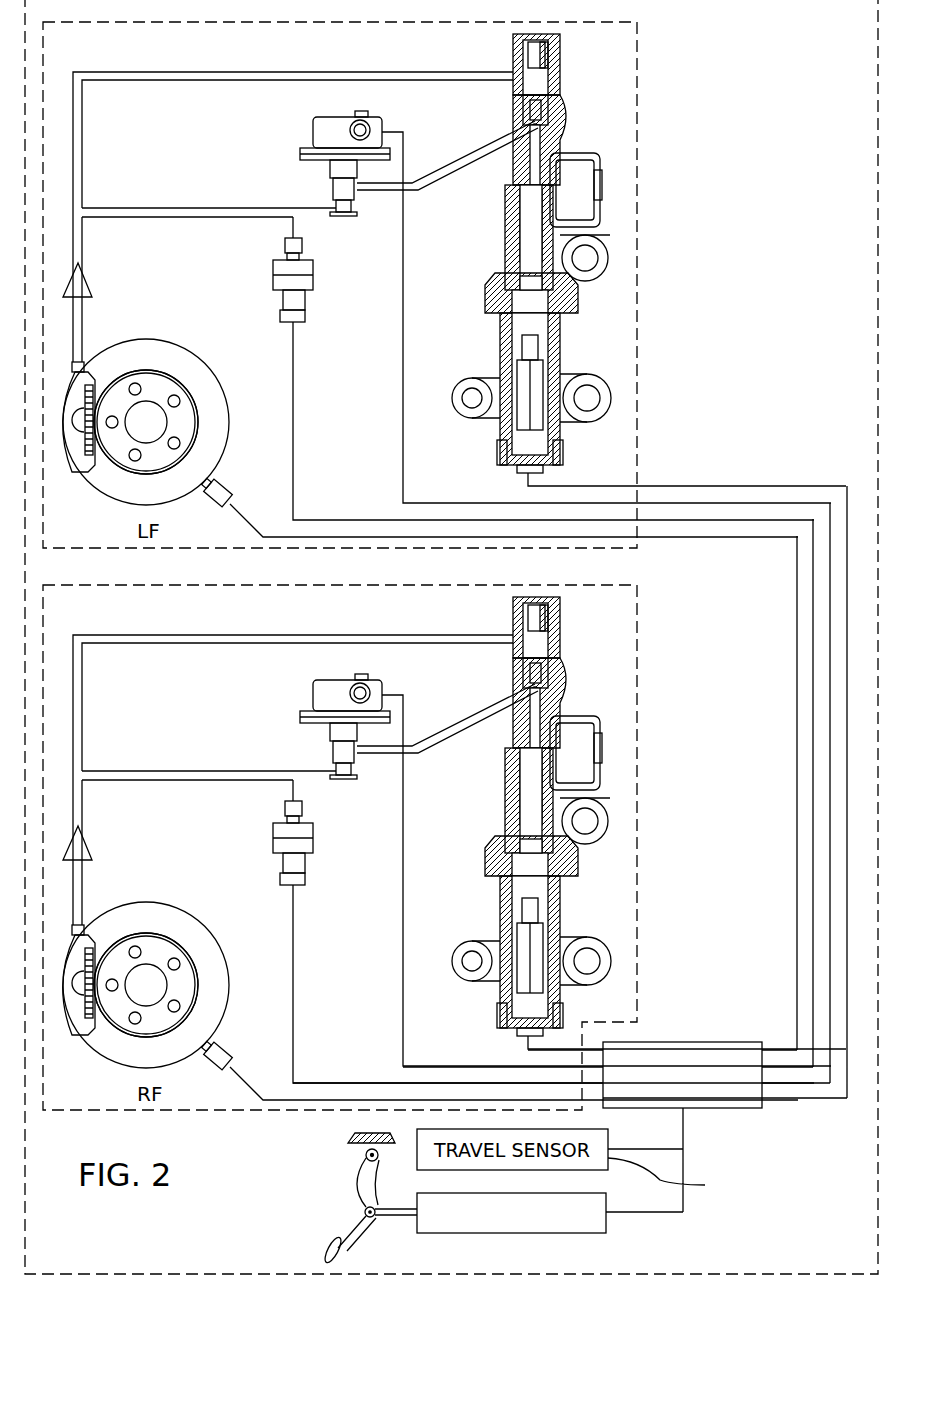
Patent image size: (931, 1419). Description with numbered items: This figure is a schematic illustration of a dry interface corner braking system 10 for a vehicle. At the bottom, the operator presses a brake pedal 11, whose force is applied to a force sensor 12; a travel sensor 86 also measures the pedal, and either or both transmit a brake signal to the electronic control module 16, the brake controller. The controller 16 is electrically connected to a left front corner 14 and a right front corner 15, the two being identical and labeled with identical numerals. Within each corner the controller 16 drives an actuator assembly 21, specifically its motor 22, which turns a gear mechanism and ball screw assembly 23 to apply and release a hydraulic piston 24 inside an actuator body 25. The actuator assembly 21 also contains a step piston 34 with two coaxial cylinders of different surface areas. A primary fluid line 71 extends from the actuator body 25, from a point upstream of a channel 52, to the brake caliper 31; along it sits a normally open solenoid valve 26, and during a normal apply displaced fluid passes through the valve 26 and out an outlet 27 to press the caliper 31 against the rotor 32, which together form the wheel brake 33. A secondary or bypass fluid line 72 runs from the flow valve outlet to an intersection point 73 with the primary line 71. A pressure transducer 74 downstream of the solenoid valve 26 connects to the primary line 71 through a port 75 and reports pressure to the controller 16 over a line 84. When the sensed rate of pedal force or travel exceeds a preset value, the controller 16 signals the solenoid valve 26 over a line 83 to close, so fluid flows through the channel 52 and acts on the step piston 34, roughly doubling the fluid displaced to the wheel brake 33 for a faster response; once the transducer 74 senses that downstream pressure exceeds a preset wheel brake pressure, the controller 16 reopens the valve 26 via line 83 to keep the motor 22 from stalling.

The brake system 10 is at (660, 145).
The brake pedal 11 is at (350, 1220).
The force sensor 12 is at (606, 1222).
The left front corner 14 is at (625, 350).
The right front corner 15 is at (625, 913).
The electronic control module 16 is at (693, 1042).
The actuator assembly 21 is at (473, 343).
The motor 22 is at (565, 432).
The gear mechanism and ball screw assembly 23 is at (505, 270).
The hydraulic piston 24 is at (515, 200).
The actuator body 25 is at (552, 128).
The solenoid valve 26 is at (312, 118).
The outlet 27 is at (88, 277).
The brake caliper 31 is at (63, 452).
The rotor 32 is at (208, 368).
The wheel brake 33 is at (187, 337).
The step piston 34 is at (548, 88).
The channel 52 is at (537, 124).
The primary fluid line 71 is at (483, 155).
The bypass fluid line 72 is at (375, 72).
The intersection point 73 is at (90, 207).
The pressure transducer 74 is at (273, 275).
The port 75 is at (285, 222).
The line 83 is at (403, 276).
The line 84 is at (300, 410).
The travel sensor 86 is at (669, 1160).